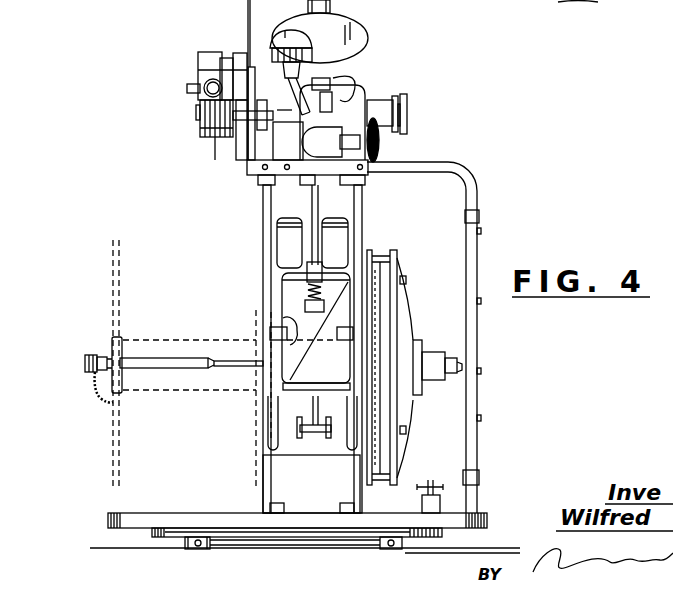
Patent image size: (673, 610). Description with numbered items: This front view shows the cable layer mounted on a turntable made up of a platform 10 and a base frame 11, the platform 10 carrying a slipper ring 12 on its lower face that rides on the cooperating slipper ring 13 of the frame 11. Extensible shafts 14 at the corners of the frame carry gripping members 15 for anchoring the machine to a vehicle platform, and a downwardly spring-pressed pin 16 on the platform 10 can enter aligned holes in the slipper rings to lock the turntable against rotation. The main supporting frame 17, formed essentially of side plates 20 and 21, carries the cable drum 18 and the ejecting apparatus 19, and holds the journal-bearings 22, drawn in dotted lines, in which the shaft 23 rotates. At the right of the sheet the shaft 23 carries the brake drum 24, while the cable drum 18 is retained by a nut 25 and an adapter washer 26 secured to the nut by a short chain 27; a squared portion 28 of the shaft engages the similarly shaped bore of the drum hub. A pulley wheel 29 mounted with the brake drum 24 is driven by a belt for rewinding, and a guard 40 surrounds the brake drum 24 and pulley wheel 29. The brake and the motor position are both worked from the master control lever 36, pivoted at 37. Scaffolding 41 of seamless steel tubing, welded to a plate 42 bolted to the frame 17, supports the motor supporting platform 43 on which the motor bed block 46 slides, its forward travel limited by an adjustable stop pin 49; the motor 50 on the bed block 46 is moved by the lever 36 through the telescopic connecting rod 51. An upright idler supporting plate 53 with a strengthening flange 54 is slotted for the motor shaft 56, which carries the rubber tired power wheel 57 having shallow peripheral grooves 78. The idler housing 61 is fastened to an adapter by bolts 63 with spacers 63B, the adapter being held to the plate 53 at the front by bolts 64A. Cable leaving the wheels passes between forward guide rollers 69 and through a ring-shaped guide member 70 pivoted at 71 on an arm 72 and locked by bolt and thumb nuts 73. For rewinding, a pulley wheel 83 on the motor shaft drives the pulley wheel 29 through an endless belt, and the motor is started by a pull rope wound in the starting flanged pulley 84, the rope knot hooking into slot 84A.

The platform 10 is at (150, 515).
The base frame 11 is at (240, 541).
The slipper ring 12 is at (290, 532).
The slipper ring 13 is at (318, 537).
The extensible shaft 14 is at (198, 550).
The gripping member 15 is at (185, 535).
The spring-pressed pin 16 is at (422, 496).
The main supporting frame 17 is at (262, 462).
The cable drum 18 is at (188, 392).
The ejecting apparatus 19 is at (262, 176).
The side plate 20 is at (262, 493).
The side plate 21 is at (356, 489).
The journal-bearing 22 is at (292, 318).
The shaft 23 is at (160, 360).
The brake drum 24 is at (410, 325).
The nut 25 is at (97, 355).
The adapter washer 26 is at (122, 340).
The chain 27 is at (108, 398).
The squared portion of shaft 28 is at (235, 360).
The pulley wheel 29 is at (383, 262).
The master control lever 36 is at (313, 232).
The pivot 37 is at (272, 425).
The guard 40 is at (478, 340).
The scaffolding 41 is at (360, 216).
The plate 42 is at (402, 424).
The motor supporting platform 43 is at (273, 180).
The motor bed block 46 is at (327, 180).
The adjustable stop pin 49 is at (293, 180).
The motor 50 is at (365, 100).
The telescopic connecting rod 51 is at (330, 225).
The idler supporting plate 53 is at (250, 150).
The strengthening flange 54 is at (246, 160).
The motor shaft 56 is at (266, 102).
The power wheel 57 is at (200, 128).
The housing 61 is at (215, 55).
The bolt 63 is at (225, 55).
The spacer 63B is at (246, 57).
The bolt 64A is at (258, 62).
The forward guide roller 69 is at (187, 89).
The guide member 70 is at (207, 86).
The pivot 71 is at (248, 120).
The arm 72 is at (200, 118).
The bolt and thumb nuts 73 is at (200, 70).
The peripheral groove 78 is at (215, 140).
The pulley wheel 83 is at (372, 118).
The starting flanged pulley 84 is at (407, 108).
The slot 84A is at (408, 123).